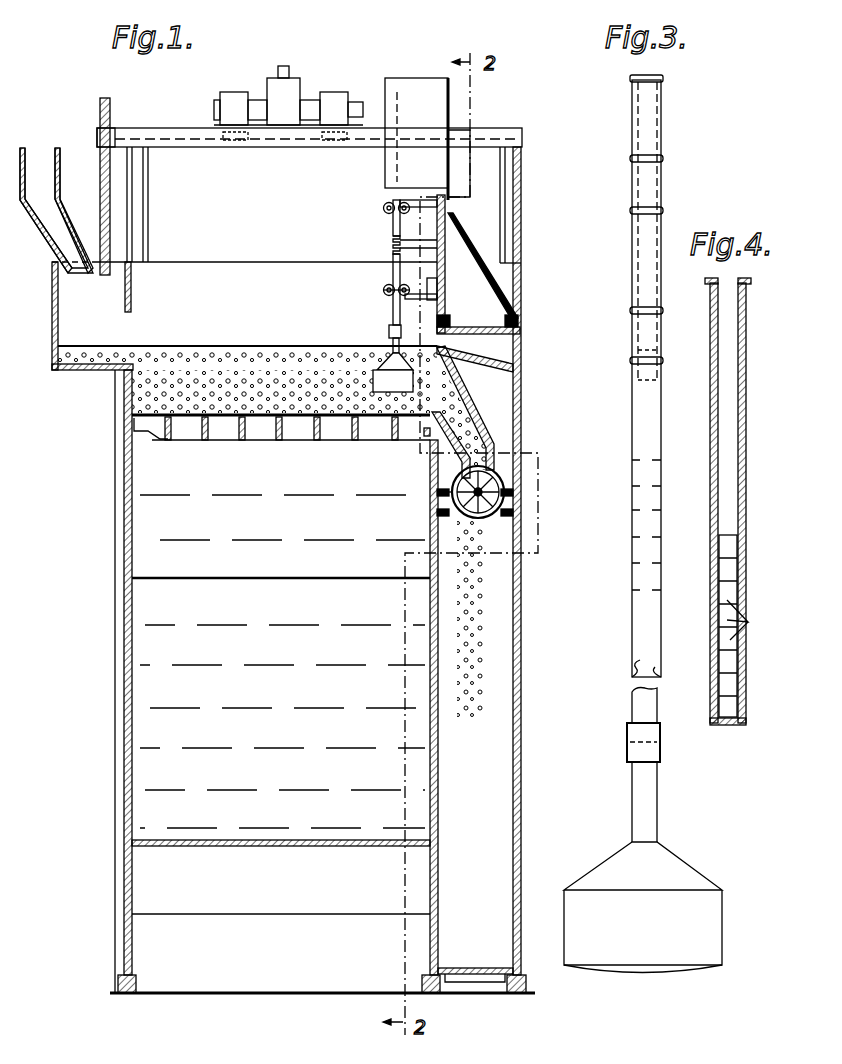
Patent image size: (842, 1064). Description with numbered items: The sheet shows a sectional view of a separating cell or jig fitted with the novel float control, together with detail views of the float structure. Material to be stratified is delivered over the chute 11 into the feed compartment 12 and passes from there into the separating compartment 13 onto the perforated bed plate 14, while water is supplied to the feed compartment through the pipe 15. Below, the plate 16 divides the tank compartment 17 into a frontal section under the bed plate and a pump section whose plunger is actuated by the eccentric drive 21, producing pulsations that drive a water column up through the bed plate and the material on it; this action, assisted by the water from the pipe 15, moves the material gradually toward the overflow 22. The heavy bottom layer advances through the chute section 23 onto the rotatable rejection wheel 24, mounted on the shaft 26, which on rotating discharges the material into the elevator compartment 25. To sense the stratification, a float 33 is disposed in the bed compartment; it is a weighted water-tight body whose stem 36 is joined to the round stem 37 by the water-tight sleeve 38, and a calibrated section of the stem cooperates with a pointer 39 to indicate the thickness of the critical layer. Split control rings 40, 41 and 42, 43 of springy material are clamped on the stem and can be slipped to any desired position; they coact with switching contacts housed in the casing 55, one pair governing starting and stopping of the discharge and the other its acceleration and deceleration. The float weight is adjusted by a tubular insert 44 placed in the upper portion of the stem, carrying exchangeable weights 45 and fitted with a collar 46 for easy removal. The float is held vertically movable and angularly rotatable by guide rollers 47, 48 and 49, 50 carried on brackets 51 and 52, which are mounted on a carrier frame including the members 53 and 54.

In FIG. 1, the chute 11 is at (40, 152).
In FIG. 1, the feed compartment 12 is at (56, 306).
In FIG. 1, the separating compartment 13 is at (247, 315).
In FIG. 1, the perforated bed plate 14 is at (225, 420).
In FIG. 1, the pipe 15 is at (108, 112).
In FIG. 1, the plate 16 is at (274, 570).
In FIG. 1, the tank compartment 17 is at (150, 772).
In FIG. 1, the eccentric drive 21 is at (300, 95).
In FIG. 1, the overflow 22 is at (520, 356).
In FIG. 1, the chute section 23 is at (465, 440).
In FIG. 1, the rejection wheel 24 is at (460, 510).
In FIG. 1, the elevator compartment 25 is at (500, 624).
In FIG. 1, the shaft 26 is at (504, 498).
In FIG. 1, the float 33 is at (393, 385).
In FIG. 3, the float 33 is at (722, 930).
In FIG. 1, the stem 36 is at (393, 345).
In FIG. 3, the stem 36 is at (660, 800).
In FIG. 1, the round stem 37 is at (393, 306).
In FIG. 3, the round stem 37 is at (632, 696).
In FIG. 1, the water-tight sleeve 38 is at (389, 329).
In FIG. 3, the water-tight sleeve 38 is at (628, 756).
In FIG. 1, the pointer 39 is at (400, 242).
In FIG. 3, the split control ring 40 is at (642, 365).
In FIG. 3, the split control ring 41 is at (642, 311).
In FIG. 3, the split control ring 42 is at (642, 210).
In FIG. 3, the split control ring 43 is at (642, 158).
In FIG. 3, the tubular insert 44 is at (634, 250).
In FIG. 4, the tubular insert 44 is at (746, 434).
In FIG. 4, the weights 45 is at (746, 626).
In FIG. 3, the collar 46 is at (664, 79).
In FIG. 4, the collar 46 is at (748, 285).
In FIG. 1, the guide roller 47 is at (383, 292).
In FIG. 1, the guide roller 48 is at (402, 284).
In FIG. 1, the guide roller 49 is at (386, 205).
In FIG. 1, the guide roller 50 is at (393, 218).
In FIG. 1, the bracket 51 is at (415, 298).
In FIG. 1, the bracket 52 is at (414, 205).
In FIG. 1, the carrier frame member 53 is at (440, 284).
In FIG. 1, the carrier frame member 54 is at (468, 244).
In FIG. 1, the casing 55 is at (406, 85).